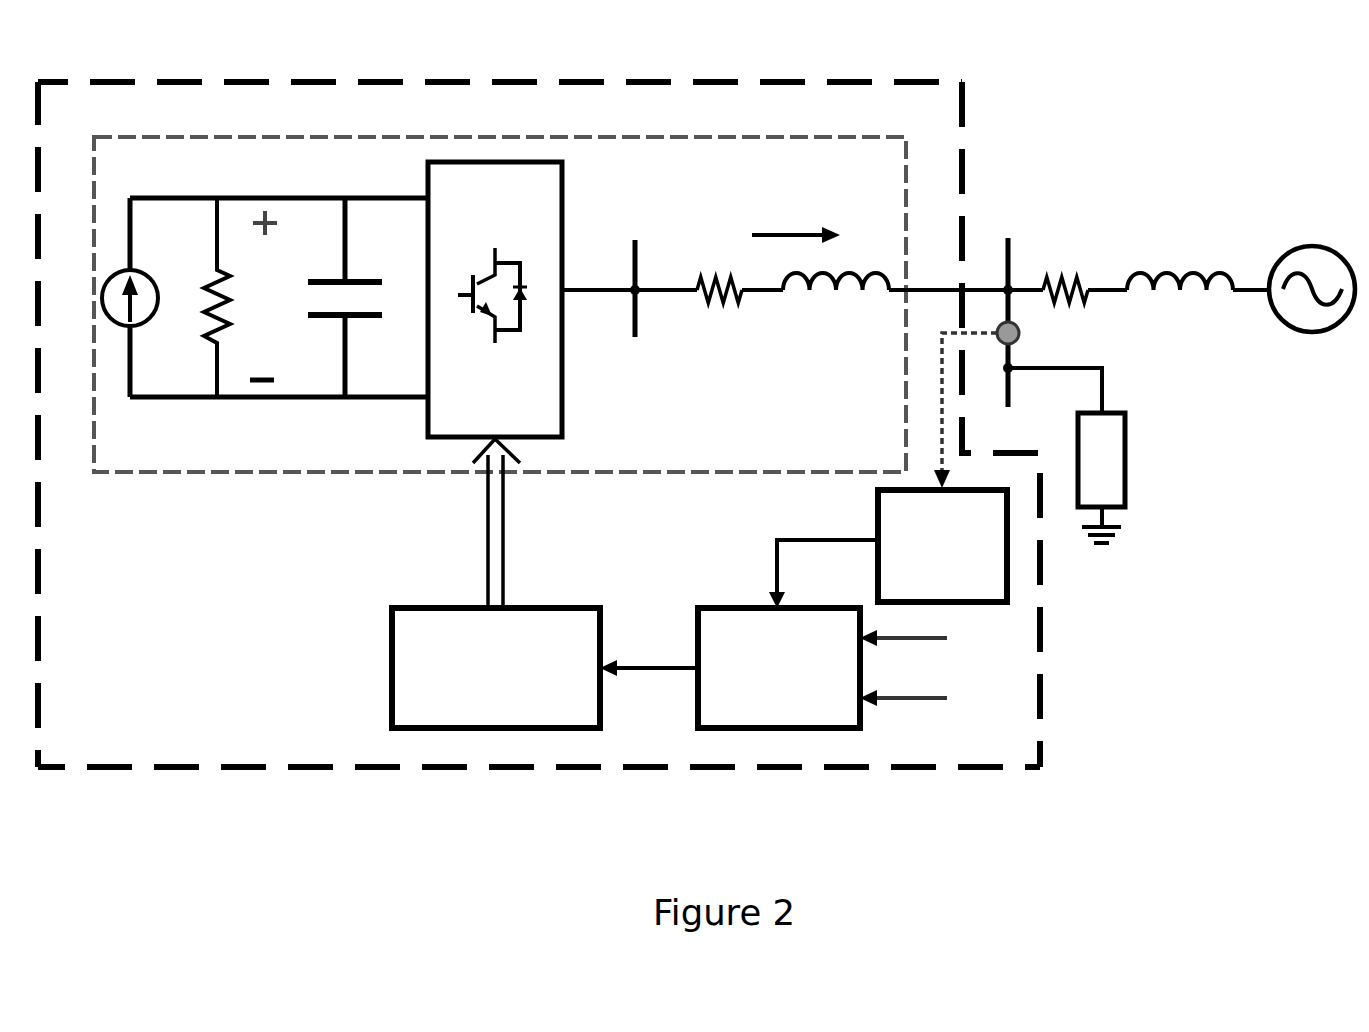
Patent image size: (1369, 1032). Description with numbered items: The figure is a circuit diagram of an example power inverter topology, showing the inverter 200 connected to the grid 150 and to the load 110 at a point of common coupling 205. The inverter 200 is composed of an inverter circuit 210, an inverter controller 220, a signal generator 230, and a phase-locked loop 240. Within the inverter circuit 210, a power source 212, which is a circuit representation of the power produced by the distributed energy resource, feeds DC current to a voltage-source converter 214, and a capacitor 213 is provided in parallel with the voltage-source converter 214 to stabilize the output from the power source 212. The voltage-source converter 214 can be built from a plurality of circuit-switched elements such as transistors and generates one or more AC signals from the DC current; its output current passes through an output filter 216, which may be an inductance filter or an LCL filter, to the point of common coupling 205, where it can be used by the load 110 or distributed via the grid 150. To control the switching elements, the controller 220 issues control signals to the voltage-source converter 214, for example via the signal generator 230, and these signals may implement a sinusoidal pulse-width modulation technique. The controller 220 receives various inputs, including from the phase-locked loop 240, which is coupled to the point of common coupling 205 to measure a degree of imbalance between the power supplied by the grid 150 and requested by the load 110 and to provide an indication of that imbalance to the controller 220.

The inverter 200 is at (777, 82).
The inverter circuit 210 is at (223, 137).
The power source 212 is at (124, 322).
The capacitor 213 is at (377, 280).
The voltage-source converter 214 is at (562, 180).
The output filter 216 is at (763, 350).
The point of common coupling 205 is at (1020, 333).
The phase-locked loop 240 is at (967, 565).
The inverter controller 220 is at (803, 687).
The signal generator 230 is at (526, 685).
The load 110 is at (1127, 480).
The grid 150 is at (1308, 245).